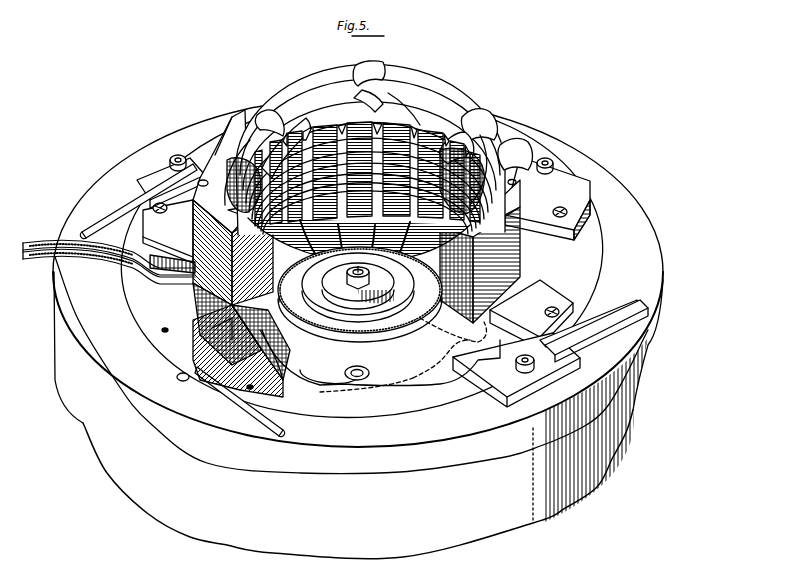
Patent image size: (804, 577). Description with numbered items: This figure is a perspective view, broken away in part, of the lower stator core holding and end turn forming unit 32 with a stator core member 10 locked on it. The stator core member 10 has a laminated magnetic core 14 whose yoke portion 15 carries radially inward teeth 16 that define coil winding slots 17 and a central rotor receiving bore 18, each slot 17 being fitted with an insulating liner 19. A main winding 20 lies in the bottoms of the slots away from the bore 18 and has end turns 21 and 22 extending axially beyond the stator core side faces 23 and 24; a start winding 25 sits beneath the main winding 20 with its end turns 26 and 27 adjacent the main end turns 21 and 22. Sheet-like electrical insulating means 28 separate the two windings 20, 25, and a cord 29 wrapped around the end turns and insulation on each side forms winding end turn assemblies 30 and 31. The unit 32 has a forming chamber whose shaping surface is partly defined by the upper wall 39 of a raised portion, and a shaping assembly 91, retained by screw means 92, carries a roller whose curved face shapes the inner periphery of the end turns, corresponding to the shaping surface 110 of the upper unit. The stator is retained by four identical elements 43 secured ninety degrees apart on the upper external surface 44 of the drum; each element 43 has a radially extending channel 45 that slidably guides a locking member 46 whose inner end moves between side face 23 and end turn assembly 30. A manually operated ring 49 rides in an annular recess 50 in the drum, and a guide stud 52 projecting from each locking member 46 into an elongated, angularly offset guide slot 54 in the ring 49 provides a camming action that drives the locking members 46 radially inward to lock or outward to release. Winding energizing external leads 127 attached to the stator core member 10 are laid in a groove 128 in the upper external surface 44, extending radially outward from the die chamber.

The stator core member 10 is at (385, 149).
The laminated magnetic core 14 is at (510, 267).
The yoke portion 15 is at (220, 171).
The teeth 16 is at (332, 140).
The coil winding slots 17 is at (250, 214).
The rotor receiving bore 18 is at (227, 288).
The insulating liner 19 is at (240, 196).
The main winding 20 is at (240, 135).
The end turn 21 is at (217, 327).
The end turn 22 is at (350, 68).
The stator core side face 23 is at (213, 302).
The stator core side face 24 is at (215, 155).
The start winding 25 is at (388, 93).
The end turn 26 is at (260, 327).
The end turn 27 is at (298, 100).
The electrical insulating means 28 is at (257, 115).
The cord 29 is at (383, 62).
The winding end turn assembly 30 is at (222, 327).
The winding end turn assembly 31 is at (440, 150).
The lower stator core holding and end turn forming unit 32 is at (634, 410).
The upper wall 39 is at (227, 330).
The elements 43 is at (160, 222).
The upper external surface 44 is at (162, 294).
The channel 45 is at (577, 327).
The locking member 46 is at (150, 175).
The ring 49 is at (664, 273).
The annular recess 50 is at (405, 416).
The guide stud 52 is at (174, 156).
The guide slot 54 is at (105, 196).
The shaping assembly 91 is at (298, 302).
The screw means 92 is at (359, 285).
The shaping surface 110 is at (290, 325).
The external leads 127 is at (37, 243).
The groove 128 is at (153, 262).